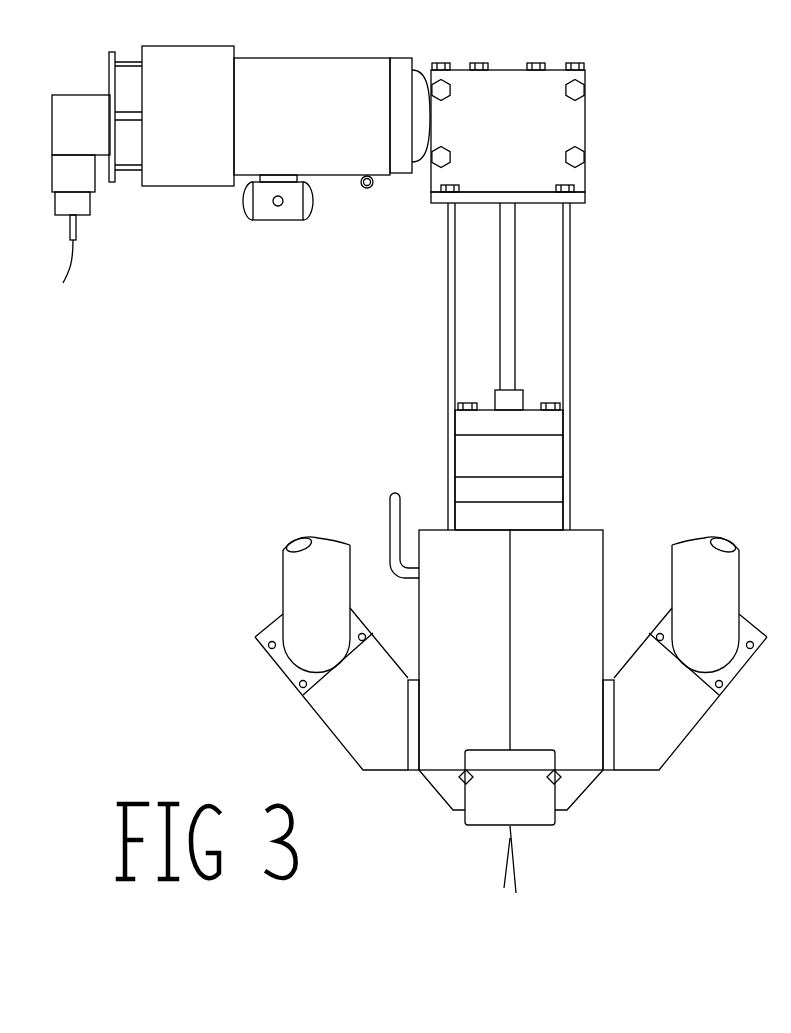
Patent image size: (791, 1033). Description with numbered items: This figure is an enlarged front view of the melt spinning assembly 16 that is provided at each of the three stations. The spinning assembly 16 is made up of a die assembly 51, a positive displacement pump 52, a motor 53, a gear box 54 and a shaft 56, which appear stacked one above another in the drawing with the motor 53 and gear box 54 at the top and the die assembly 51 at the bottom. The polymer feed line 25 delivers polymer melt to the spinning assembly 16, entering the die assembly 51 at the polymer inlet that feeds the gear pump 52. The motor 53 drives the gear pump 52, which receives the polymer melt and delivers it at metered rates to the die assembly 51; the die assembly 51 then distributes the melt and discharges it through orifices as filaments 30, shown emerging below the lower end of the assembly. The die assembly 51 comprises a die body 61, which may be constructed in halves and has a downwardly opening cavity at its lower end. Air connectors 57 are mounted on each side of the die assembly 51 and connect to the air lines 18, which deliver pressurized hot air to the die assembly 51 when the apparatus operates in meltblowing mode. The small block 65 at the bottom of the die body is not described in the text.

The spinning assembly 16 is at (600, 321).
The air lines 18 is at (288, 585).
The polymer feed line 25 is at (388, 528).
The filaments 30 is at (505, 867).
The die assembly 51 is at (620, 542).
The positive displacement pump 52 is at (552, 458).
The motor 53 is at (288, 82).
The gear box 54 is at (554, 143).
The shaft 56 is at (497, 390).
The air connectors 57 is at (342, 717).
The die body 61 is at (593, 608).
The needle holder block 65 is at (493, 797).